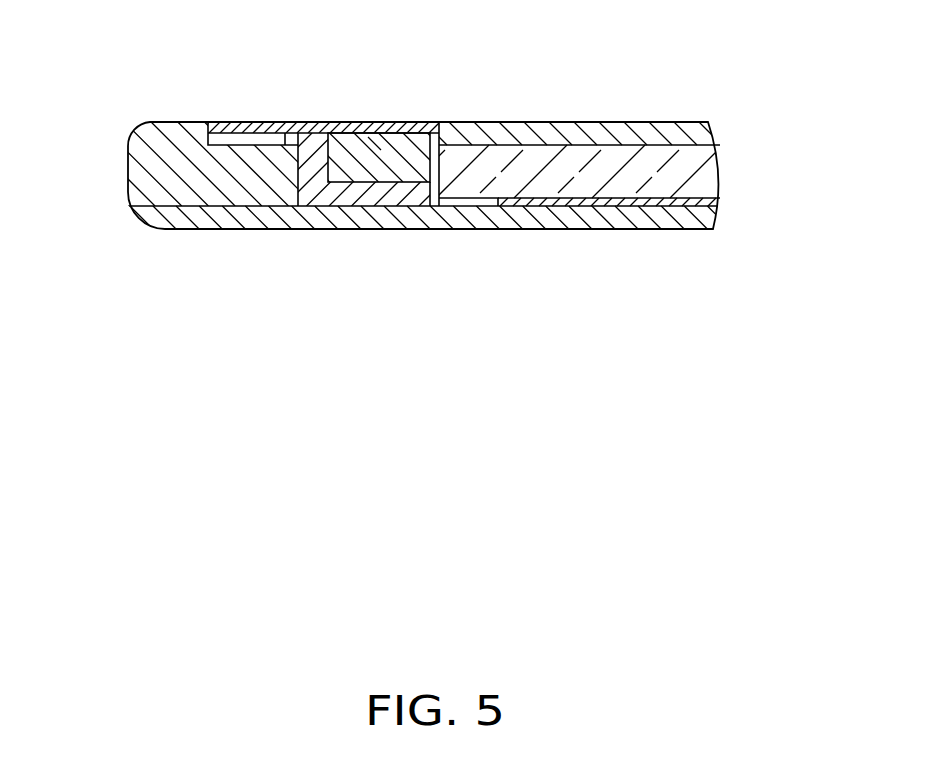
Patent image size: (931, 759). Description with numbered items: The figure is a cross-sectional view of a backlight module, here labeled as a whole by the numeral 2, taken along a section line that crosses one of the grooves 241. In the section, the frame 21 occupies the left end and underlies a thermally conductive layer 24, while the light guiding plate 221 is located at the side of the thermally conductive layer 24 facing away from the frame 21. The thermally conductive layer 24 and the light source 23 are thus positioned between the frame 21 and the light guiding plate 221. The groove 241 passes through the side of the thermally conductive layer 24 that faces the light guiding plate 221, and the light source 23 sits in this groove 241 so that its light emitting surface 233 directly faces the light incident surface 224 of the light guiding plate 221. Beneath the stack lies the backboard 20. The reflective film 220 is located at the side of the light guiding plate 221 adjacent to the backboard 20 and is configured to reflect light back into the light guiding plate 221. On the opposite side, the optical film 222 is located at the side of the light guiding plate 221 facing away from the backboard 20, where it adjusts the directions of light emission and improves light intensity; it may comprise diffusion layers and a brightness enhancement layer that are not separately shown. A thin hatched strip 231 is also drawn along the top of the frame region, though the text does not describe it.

The electronic device housing assembly 2 is at (750, 192).
The backboard 20 is at (498, 217).
The frame 21 is at (150, 160).
The reflective film 220 is at (659, 202).
The light guiding plate 221 is at (685, 196).
The optical film 222 is at (683, 121).
The light incident surface 224 is at (438, 186).
The light source 23 is at (380, 152).
The top coating strip 231 is at (284, 127).
The light emitting surface 233 is at (441, 123).
The thermally conductive layer 24 is at (328, 196).
The groove 241 is at (377, 186).